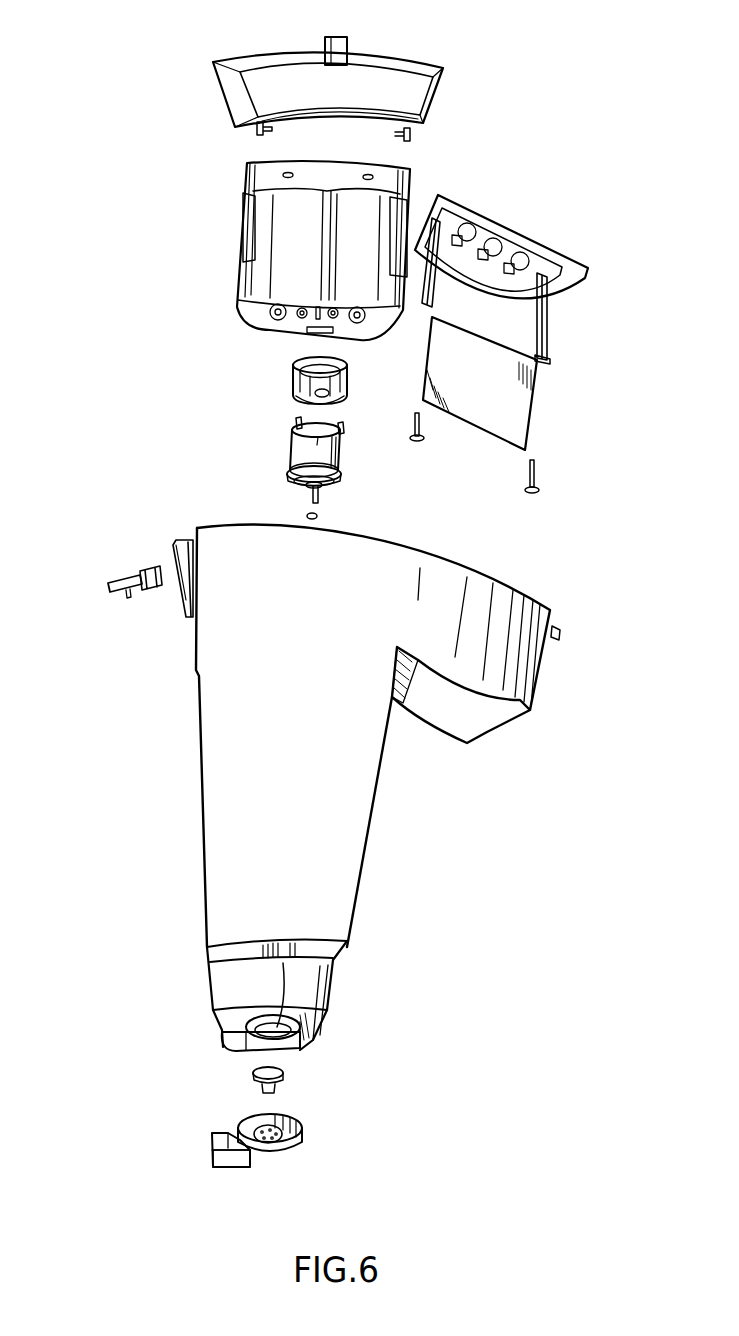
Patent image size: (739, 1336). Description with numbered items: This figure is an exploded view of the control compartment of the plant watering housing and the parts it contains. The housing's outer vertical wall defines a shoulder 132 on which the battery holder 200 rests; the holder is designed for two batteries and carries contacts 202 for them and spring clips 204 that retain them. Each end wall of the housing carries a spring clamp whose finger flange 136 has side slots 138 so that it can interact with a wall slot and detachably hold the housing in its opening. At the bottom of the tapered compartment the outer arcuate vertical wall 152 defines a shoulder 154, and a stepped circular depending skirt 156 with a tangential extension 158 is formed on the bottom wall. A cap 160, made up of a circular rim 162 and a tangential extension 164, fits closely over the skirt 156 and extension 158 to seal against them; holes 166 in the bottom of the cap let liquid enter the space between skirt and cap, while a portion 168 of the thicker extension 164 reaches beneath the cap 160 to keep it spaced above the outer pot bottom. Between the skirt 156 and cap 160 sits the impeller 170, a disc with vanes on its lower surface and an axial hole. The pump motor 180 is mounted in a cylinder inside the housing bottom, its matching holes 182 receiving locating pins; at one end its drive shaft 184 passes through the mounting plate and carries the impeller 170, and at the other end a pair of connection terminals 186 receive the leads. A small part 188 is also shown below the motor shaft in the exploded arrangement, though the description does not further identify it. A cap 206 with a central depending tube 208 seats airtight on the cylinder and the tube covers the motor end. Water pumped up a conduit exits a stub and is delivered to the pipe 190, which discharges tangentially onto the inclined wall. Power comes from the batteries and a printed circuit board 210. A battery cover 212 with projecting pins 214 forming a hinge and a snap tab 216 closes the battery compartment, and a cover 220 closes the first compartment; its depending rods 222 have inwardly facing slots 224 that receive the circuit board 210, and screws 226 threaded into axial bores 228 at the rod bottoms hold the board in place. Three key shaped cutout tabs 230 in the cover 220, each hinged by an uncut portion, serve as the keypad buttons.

The shoulder 132 is at (193, 676).
The finger flange 136 is at (183, 598).
The side slots 138 is at (180, 543).
The outer arcuate vertical wall 152 is at (213, 782).
The shoulder 154 is at (340, 947).
The stepped circular depending skirt 156 is at (287, 952).
The tangential extension 158 is at (220, 1037).
The cap 160 is at (258, 1148).
The circular rim 162 is at (300, 1133).
The tangential extension 164 is at (215, 1148).
The holes 166 is at (267, 1147).
The portion 168 is at (228, 1157).
The impeller 170 is at (287, 1073).
The pump motor 180 is at (290, 458).
The matching holes 182 is at (297, 483).
The drive shaft 184 is at (312, 500).
The connection terminals 186 is at (293, 428).
The shaft opening 188 is at (320, 515).
The pipe 190 is at (108, 586).
The battery holder 200 is at (407, 167).
The contacts 202 is at (278, 320).
The spring clips 204 is at (247, 228).
The cap 206 is at (345, 378).
The central depending tube 208 is at (303, 402).
The printed circuit board 210 is at (533, 408).
The battery cover 212 is at (423, 90).
The projecting pins 214 is at (395, 133).
The snap tab 216 is at (343, 47).
The cover 220 is at (550, 237).
The rods 222 is at (552, 323).
The inwardly facing slots 224 is at (538, 328).
The screws 226 is at (538, 474).
The threaded axial bores 228 is at (549, 363).
The key shaped cutout tabs 230 is at (467, 233).